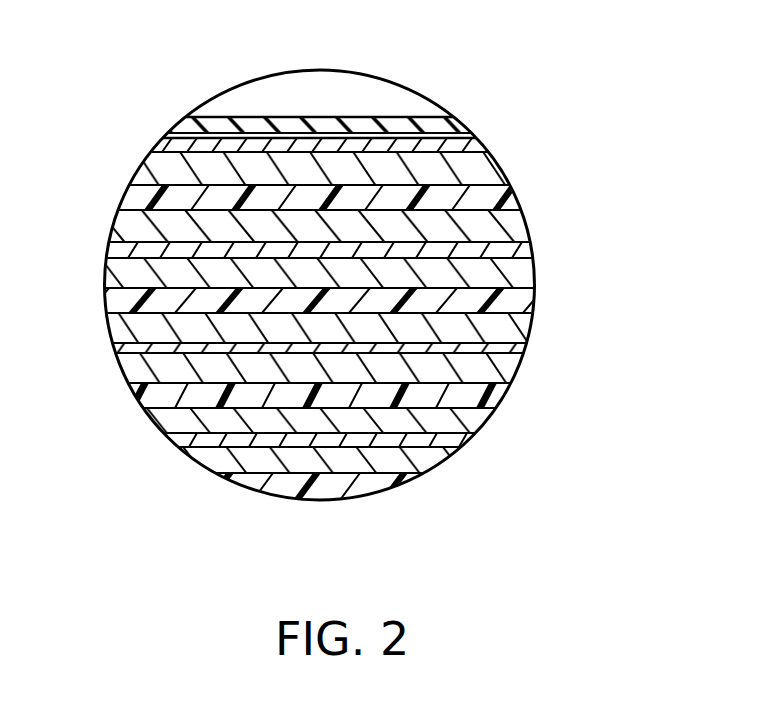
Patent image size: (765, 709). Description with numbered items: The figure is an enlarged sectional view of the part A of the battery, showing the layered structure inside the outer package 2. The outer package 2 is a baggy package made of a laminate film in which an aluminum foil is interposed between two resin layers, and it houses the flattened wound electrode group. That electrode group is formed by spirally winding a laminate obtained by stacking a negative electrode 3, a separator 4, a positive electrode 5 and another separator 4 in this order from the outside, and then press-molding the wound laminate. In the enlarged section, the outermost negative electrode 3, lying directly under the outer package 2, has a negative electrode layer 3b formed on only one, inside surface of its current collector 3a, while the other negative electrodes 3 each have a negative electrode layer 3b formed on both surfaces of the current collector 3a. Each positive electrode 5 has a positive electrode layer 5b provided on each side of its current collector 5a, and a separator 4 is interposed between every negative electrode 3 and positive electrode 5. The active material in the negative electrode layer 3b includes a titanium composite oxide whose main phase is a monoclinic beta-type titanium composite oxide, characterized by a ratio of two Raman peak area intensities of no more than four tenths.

The part A is at (220, 105).
The outer package 2 is at (450, 125).
The negative electrode 3 is at (590, 90).
The current collector 3a is at (478, 148).
The negative electrode layer 3b is at (478, 170).
The separator 4 is at (135, 195).
The positive electrode 5 is at (620, 178).
The current collector 5a is at (523, 250).
The positive electrode layer 5b is at (512, 228).